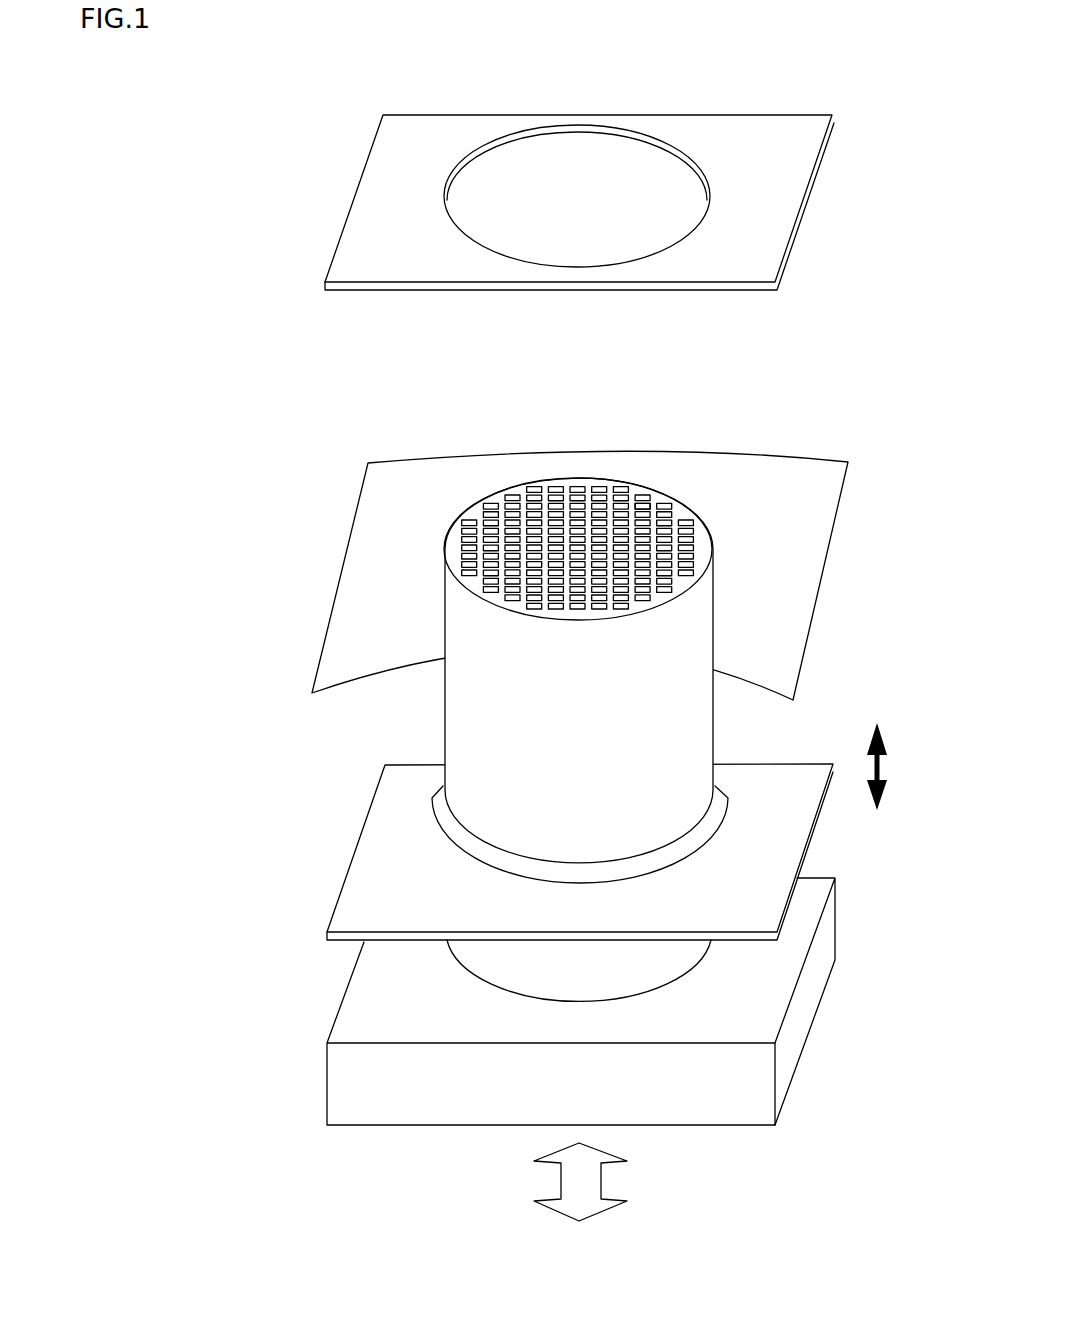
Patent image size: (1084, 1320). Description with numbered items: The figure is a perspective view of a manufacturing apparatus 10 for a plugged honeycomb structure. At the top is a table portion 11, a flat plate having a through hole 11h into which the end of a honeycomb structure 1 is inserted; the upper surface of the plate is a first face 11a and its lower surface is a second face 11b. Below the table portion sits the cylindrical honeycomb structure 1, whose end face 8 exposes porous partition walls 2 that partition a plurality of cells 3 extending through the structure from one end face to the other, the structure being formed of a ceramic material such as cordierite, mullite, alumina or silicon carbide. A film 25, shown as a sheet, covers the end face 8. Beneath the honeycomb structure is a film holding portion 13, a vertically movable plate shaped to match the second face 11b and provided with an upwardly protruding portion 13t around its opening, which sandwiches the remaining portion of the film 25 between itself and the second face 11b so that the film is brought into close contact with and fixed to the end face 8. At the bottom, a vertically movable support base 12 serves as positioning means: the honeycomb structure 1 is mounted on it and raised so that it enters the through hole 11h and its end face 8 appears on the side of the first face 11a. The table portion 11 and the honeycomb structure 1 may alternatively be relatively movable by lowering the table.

The honeycomb structure 1 is at (392, 730).
The partition walls 2 is at (652, 502).
The cells 3 is at (692, 537).
The end face 8 is at (449, 533).
The manufacturing apparatus 10 is at (786, 62).
The table portion 11 is at (822, 198).
The first face 11a is at (770, 158).
The second face 11b is at (778, 284).
The through hole 11h is at (522, 182).
The support base 12 is at (815, 968).
The film holding portion 13 is at (765, 790).
The protruding portion 13t is at (448, 815).
The film 25 is at (818, 488).